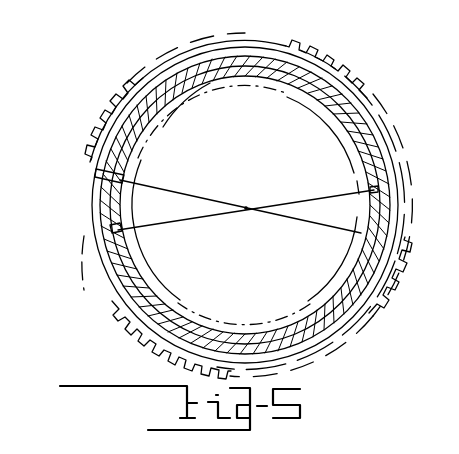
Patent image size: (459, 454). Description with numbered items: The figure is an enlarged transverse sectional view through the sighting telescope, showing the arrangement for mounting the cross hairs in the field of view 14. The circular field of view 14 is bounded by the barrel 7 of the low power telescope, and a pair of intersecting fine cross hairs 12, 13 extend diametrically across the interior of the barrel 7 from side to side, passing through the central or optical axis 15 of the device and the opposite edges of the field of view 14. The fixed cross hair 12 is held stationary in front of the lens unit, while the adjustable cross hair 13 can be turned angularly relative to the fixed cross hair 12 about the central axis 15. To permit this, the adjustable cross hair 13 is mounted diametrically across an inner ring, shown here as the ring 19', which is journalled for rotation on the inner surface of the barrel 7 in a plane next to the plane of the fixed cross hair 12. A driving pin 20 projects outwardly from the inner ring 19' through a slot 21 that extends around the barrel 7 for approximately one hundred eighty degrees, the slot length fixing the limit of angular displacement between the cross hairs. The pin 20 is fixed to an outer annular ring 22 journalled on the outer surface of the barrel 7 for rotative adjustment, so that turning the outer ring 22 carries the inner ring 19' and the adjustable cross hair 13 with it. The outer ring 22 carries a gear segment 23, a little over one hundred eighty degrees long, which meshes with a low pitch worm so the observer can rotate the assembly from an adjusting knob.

The barrel 7 is at (373, 129).
The fixed cross hair 12 is at (233, 212).
The adjustable cross hair 13 is at (243, 206).
The field of view 14 is at (344, 169).
The central or optical axis 15 is at (247, 212).
The inner ring member 19' is at (245, 204).
The driving pin 20 is at (97, 182).
The slot 21 is at (92, 238).
The annular ring 22 is at (203, 61).
The gear segment 23 is at (330, 62).